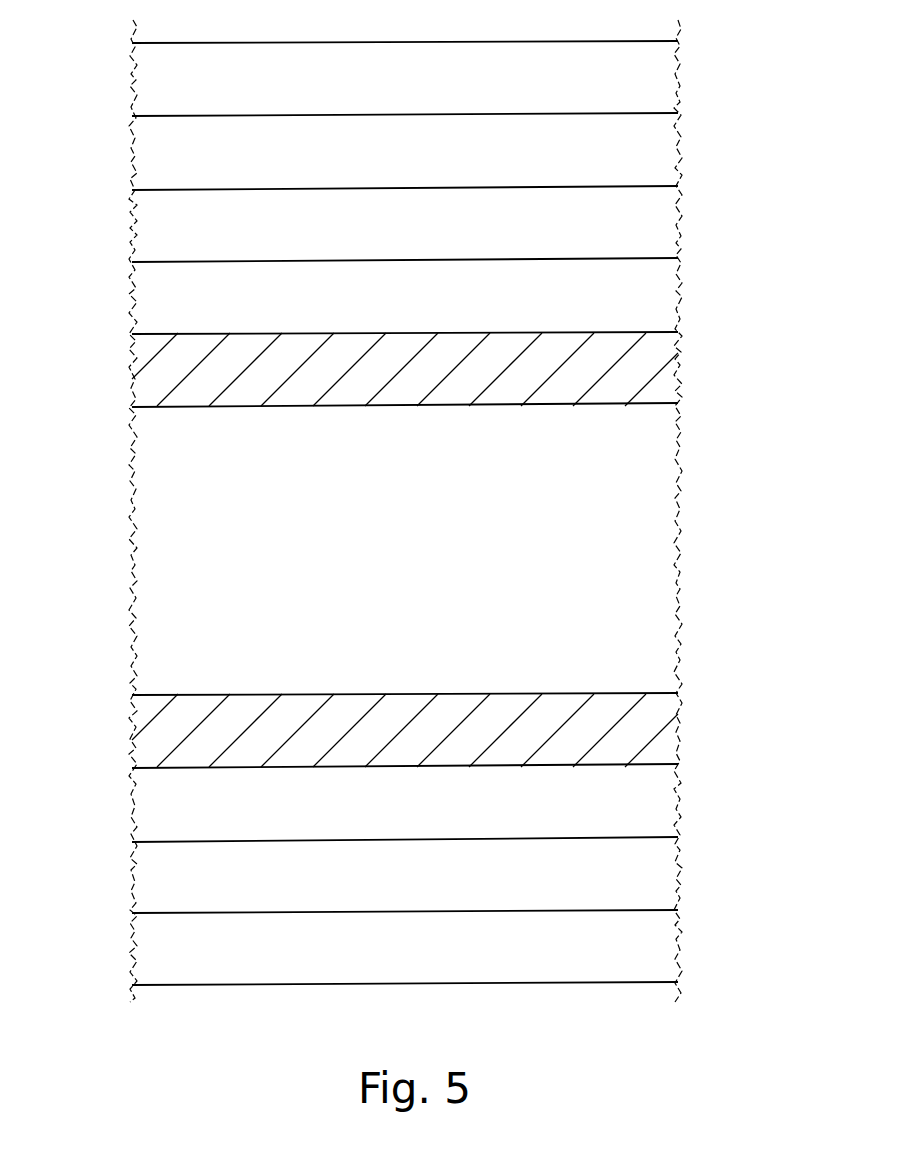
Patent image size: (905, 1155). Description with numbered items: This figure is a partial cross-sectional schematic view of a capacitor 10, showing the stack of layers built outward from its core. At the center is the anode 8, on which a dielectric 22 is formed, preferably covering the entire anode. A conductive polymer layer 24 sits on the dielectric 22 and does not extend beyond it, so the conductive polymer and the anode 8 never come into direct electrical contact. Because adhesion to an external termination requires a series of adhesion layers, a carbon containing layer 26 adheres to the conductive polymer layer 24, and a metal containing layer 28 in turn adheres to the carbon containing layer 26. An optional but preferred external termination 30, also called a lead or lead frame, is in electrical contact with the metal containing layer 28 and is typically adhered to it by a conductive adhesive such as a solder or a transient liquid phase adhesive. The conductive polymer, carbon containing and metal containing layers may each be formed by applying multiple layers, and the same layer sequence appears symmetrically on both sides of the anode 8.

The anode 8 is at (558, 582).
The capacitor 10 is at (710, 482).
The dielectric 22 is at (633, 368).
The conductive polymer layer 24 is at (208, 298).
The carbon containing layer 26 is at (633, 228).
The metal containing layer 28 is at (185, 157).
The external termination 30 is at (634, 84).